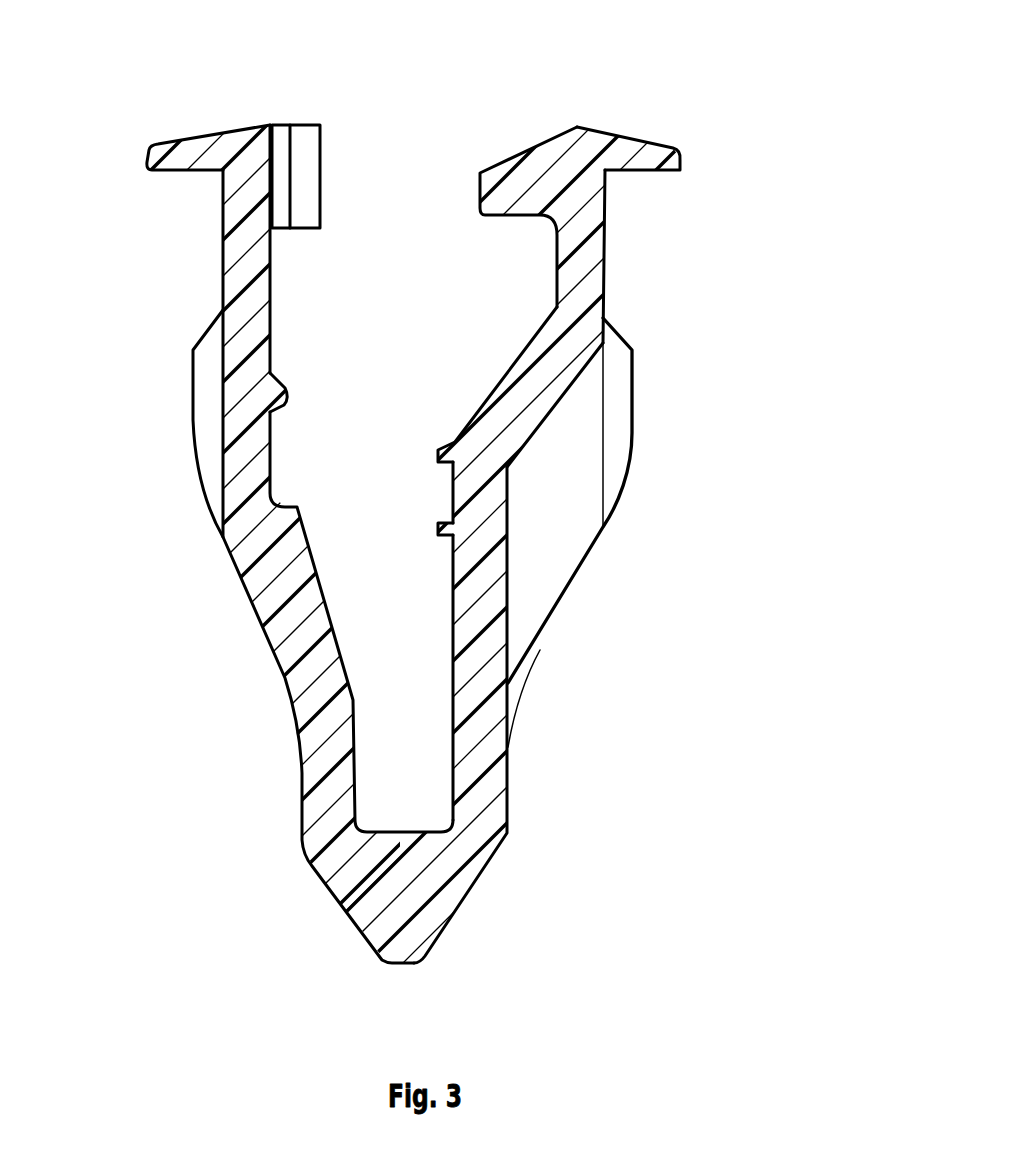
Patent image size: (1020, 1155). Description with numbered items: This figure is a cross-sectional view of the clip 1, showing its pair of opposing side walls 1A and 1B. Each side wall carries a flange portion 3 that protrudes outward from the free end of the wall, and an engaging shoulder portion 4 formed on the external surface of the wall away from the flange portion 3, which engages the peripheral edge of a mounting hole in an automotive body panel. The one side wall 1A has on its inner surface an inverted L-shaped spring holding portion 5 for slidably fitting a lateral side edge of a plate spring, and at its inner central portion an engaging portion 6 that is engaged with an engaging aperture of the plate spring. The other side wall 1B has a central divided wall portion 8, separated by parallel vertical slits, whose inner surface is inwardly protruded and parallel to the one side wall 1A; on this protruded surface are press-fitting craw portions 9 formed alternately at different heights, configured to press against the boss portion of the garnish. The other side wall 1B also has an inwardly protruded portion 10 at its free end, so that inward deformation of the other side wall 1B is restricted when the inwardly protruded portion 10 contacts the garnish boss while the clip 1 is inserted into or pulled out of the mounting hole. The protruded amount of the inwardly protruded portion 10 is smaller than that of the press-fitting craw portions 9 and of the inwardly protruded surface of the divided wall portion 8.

The clip 1 is at (730, 203).
The side wall 1A is at (277, 658).
The side wall 1B is at (540, 653).
The flange portion 3 is at (150, 148).
The engaging shoulder portion 4 is at (215, 326).
The spring holding portion 5 is at (305, 143).
The engaging portion 6 is at (283, 393).
The divided wall portion 8 is at (503, 370).
The press-fitting craw portion 9 is at (445, 463).
The inwardly protruded portion 10 is at (492, 165).